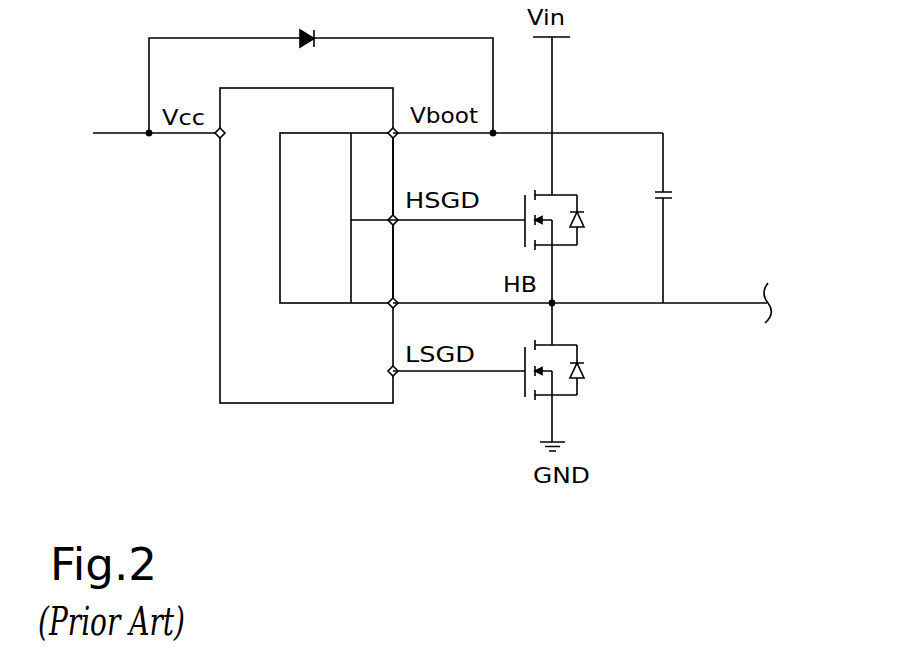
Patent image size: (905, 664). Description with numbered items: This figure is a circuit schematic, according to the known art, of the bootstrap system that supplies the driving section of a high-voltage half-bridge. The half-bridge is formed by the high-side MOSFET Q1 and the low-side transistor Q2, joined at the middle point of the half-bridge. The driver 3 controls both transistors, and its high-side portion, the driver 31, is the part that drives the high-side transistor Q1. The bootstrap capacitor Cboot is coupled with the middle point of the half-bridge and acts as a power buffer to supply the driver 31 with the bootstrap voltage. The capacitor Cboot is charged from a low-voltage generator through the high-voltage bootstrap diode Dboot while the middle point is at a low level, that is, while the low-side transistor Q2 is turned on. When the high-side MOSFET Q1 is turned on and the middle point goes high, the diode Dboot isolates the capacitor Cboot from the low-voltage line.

The driver 3 is at (263, 232).
The driver 31 is at (298, 132).
The high-side MOSFET Q1 is at (542, 233).
The low-side transistor Q2 is at (539, 372).
The bootstrap capacitor Cboot is at (702, 218).
The bootstrap diode Dboot is at (319, 23).